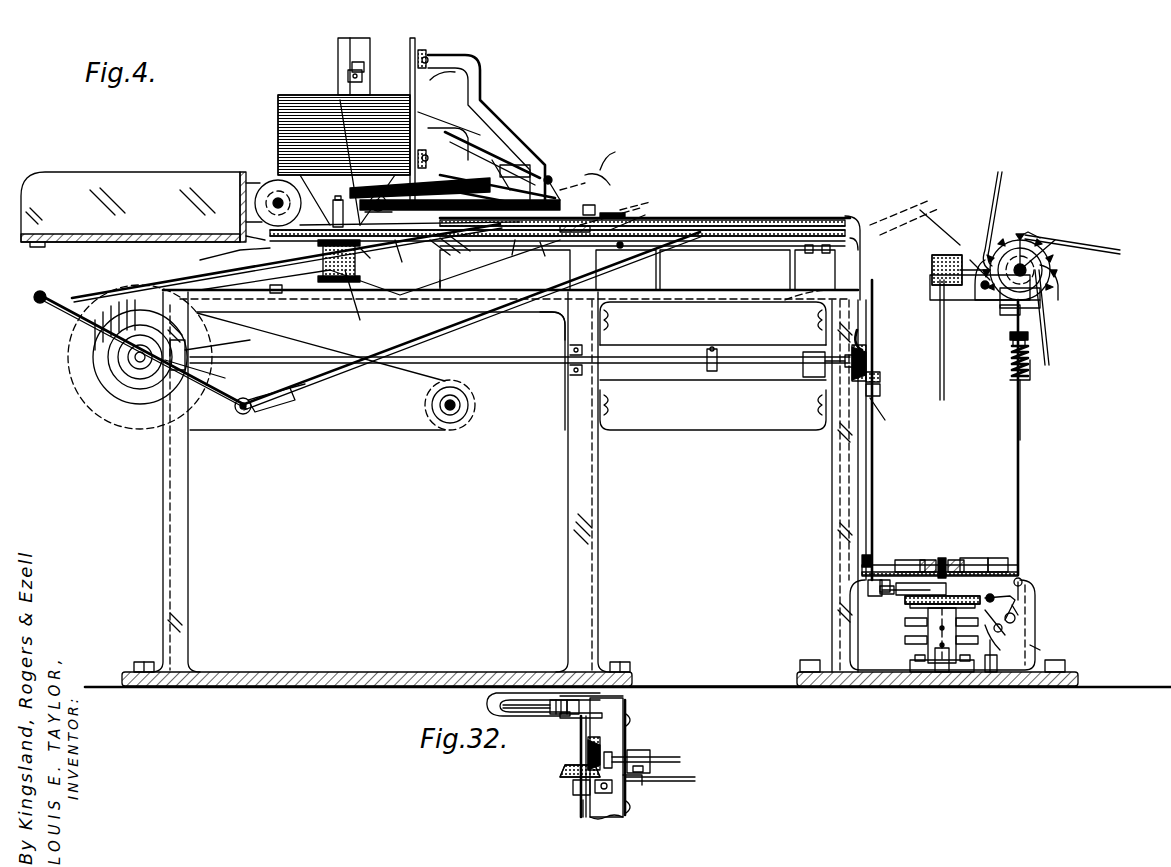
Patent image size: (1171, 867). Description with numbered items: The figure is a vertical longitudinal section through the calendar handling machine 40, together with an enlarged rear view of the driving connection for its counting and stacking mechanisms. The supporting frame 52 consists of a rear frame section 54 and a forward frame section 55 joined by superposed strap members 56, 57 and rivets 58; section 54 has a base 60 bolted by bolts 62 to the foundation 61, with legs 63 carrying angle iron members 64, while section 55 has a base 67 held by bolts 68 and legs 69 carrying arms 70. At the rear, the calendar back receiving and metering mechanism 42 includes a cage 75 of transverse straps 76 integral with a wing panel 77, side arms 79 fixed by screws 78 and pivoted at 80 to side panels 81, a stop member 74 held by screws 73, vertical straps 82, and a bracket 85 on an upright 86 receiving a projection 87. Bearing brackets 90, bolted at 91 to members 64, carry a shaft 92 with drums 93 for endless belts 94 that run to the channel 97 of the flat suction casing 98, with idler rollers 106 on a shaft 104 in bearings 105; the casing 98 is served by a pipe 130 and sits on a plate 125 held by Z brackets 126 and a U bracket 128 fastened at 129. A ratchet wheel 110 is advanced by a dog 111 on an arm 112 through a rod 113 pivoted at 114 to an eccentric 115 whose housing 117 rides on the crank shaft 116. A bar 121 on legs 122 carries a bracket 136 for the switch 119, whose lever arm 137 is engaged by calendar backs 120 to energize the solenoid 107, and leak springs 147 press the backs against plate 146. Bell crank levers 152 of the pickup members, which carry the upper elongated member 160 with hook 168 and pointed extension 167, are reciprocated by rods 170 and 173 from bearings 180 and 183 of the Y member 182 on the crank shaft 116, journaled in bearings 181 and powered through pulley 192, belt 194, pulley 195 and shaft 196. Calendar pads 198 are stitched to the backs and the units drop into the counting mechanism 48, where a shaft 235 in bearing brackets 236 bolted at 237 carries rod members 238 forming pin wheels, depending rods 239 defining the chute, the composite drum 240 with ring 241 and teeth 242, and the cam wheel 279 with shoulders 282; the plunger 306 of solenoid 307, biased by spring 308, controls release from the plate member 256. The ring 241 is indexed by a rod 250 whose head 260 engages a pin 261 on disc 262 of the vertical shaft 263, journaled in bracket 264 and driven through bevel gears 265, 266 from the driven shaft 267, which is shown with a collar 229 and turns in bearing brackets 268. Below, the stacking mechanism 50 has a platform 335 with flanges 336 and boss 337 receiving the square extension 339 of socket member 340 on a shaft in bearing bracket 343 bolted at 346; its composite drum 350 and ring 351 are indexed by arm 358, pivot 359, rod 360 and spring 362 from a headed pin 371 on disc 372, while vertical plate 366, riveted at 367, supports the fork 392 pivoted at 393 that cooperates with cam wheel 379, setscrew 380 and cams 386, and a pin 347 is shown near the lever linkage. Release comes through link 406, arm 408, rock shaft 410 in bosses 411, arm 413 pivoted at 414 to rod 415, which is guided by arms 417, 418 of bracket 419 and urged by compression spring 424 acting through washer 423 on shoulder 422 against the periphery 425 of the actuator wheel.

In FIG. 4, the machine 40 is at (760, 128).
In FIG. 4, the calendar back receiving and metering mechanism 42 is at (260, 160).
In FIG. 4, the stitched calendar pad and back unit receiving and counting mechanism 48 is at (1048, 215).
In FIG. 4, the calendar unit stacking mechanism 50 is at (950, 555).
In FIG. 4, the supporting frame 52 is at (535, 322).
In FIG. 4, the frame section 54 is at (158, 570).
In FIG. 4, the frame section 55 is at (826, 523).
In FIG. 4, the strap member 56 is at (650, 312).
In FIG. 32, the strap member 56 is at (624, 720).
In FIG. 4, the strap member 57 is at (702, 390).
In FIG. 32, the strap member 57 is at (690, 778).
In FIG. 4, the rivets 58 is at (606, 318).
In FIG. 32, the rivets 58 is at (632, 720).
In FIG. 4, the base 60 is at (360, 688).
In FIG. 4, the foundation 61 is at (718, 683).
In FIG. 4, the bolts 62 is at (145, 662).
In FIG. 4, the legs 63 is at (178, 642).
In FIG. 4, the angle iron members 64 is at (478, 312).
In FIG. 4, the base 67 is at (1015, 688).
In FIG. 4, the bolts 68 is at (808, 668).
In FIG. 4, the legs 69 is at (840, 488).
In FIG. 32, the legs 69 is at (598, 808).
In FIG. 4, the arm 70 is at (877, 348).
In FIG. 4, the screws 73 is at (515, 165).
In FIG. 4, the stop member 74 is at (505, 165).
In FIG. 4, the calendar back receiving cage 75 is at (500, 92).
In FIG. 4, the transverse straps 76 is at (422, 50).
In FIG. 4, the side or wing panel 77 is at (388, 60).
In FIG. 4, the screws 78 is at (430, 58).
In FIG. 4, the side arms 79 is at (505, 140).
In FIG. 4, the pivot 80 is at (555, 176).
In FIG. 4, the vertical side panels 81 is at (470, 150).
In FIG. 4, the vertical straps 82 is at (433, 92).
In FIG. 4, the bracket 85 is at (348, 76).
In FIG. 4, the vertical upright 86 is at (338, 42).
In FIG. 4, the projection 87 is at (352, 65).
In FIG. 4, the bearing brackets 90 is at (246, 236).
In FIG. 4, the bolts 91 is at (263, 275).
In FIG. 4, the shaft 92 is at (273, 203).
In FIG. 4, the small drums 93 is at (268, 185).
In FIG. 4, the endless belt 94 is at (246, 183).
In FIG. 4, the transverse channel 97 is at (397, 256).
In FIG. 4, the flat suction casing 98 is at (480, 240).
In FIG. 4, the third shaft 104 is at (425, 130).
In FIG. 4, the bearings 105 is at (490, 200).
In FIG. 4, the idler roller 106 is at (340, 100).
In FIG. 4, the solenoid 107 is at (361, 303).
In FIG. 4, the ratchet wheel 110 is at (246, 220).
In FIG. 4, the wide dog 111 is at (285, 285).
In FIG. 4, the arm 112 is at (334, 212).
In FIG. 4, the rod 113 is at (235, 275).
In FIG. 4, the pivotal connection 114 is at (335, 286).
In FIG. 4, the eccentric 115 is at (212, 344).
In FIG. 4, the crank shaft 116 is at (135, 370).
In FIG. 4, the housing 117 is at (118, 360).
In FIG. 4, the switch 119 is at (511, 255).
In FIG. 4, the calendar backs 120 is at (305, 115).
In FIG. 4, the transversely disposed bar 121 is at (605, 183).
In FIG. 4, the vertical legs 122 is at (596, 275).
In FIG. 4, the plate 125 is at (549, 256).
In FIG. 4, the Z brackets 126 is at (495, 278).
In FIG. 4, the U bracket 128 is at (795, 270).
In FIG. 4, the rivets or bolts 129 is at (805, 249).
In FIG. 4, the pipe 130 is at (372, 208).
In FIG. 4, the bracket 136 is at (615, 151).
In FIG. 4, the lever arm 137 is at (575, 246).
In FIG. 4, the plate 146 is at (722, 238).
In FIG. 4, the leak springs 147 is at (655, 214).
In FIG. 4, the bell crank lever 152 is at (630, 235).
In FIG. 4, the upper elongated member 160 is at (752, 217).
In FIG. 4, the pointed extension 167 is at (822, 217).
In FIG. 4, the calendar back pickup hook member 168 is at (618, 212).
In FIG. 4, the rod 170 is at (80, 296).
In FIG. 4, the rod 173 is at (315, 380).
In FIG. 4, the bearing 180 is at (55, 296).
In FIG. 4, the bearings 181 is at (207, 373).
In FIG. 4, the Y-shaped member 182 is at (275, 405).
In FIG. 4, the bearing 183 is at (240, 414).
In FIG. 4, the pulley 192 is at (112, 415).
In FIG. 4, the belt 194 is at (405, 432).
In FIG. 4, the pulley 195 is at (465, 420).
In FIG. 4, the shaft 196 is at (450, 415).
In FIG. 4, the calendar pads 198 is at (945, 240).
In FIG. 4, the collar 229 is at (712, 349).
In FIG. 4, the shaft 235 is at (1045, 265).
In FIG. 4, the bearing brackets 236 is at (1040, 295).
In FIG. 4, the bolts 237 is at (1058, 283).
In FIG. 4, the wire or rod members 238 is at (1003, 180).
In FIG. 4, the depending rod 239 is at (885, 400).
In FIG. 4, the composite drum 240 is at (1045, 268).
In FIG. 4, the ring 241 is at (1030, 235).
In FIG. 4, the teeth 242 is at (1038, 248).
In FIG. 32, the rod 250 is at (488, 702).
In FIG. 4, the plate member 256 is at (1010, 320).
In FIG. 32, the head 260 is at (555, 715).
In FIG. 32, the pin 261 is at (624, 698).
In FIG. 32, the disc 262 is at (602, 714).
In FIG. 4, the vertical shaft 263 is at (885, 335).
In FIG. 32, the vertical shaft 263 is at (580, 746).
In FIG. 4, the bearing bracket 264 is at (880, 392).
In FIG. 32, the bearing bracket 264 is at (573, 786).
In FIG. 4, the beveled gear 265 is at (880, 378).
In FIG. 32, the beveled gear 265 is at (568, 768).
In FIG. 4, the beveled gear 266 is at (868, 366).
In FIG. 32, the beveled gear 266 is at (602, 745).
In FIG. 4, the driven shaft 267 is at (295, 362).
In FIG. 32, the driven shaft 267 is at (675, 760).
In FIG. 4, the bearing bracket 268 is at (810, 352).
In FIG. 4, the cam wheel 279 is at (1050, 258).
In FIG. 4, the radial shoulders 282 is at (1030, 240).
In FIG. 4, the plunger 306 is at (975, 268).
In FIG. 4, the solenoid 307 is at (928, 248).
In FIG. 4, the spring 308 is at (1000, 316).
In FIG. 4, the platform 335 is at (926, 558).
In FIG. 4, the side flanges 336 is at (860, 563).
In FIG. 4, the central boss 337 is at (960, 558).
In FIG. 4, the square reduced extension 339 is at (942, 555).
In FIG. 4, the socket member 340 is at (912, 560).
In FIG. 4, the bearing bracket 343 is at (940, 672).
In FIG. 4, the bolts 346 is at (912, 665).
In FIG. 4, the pin 347 is at (990, 591).
In FIG. 4, the composite drum 350 is at (908, 608).
In FIG. 4, the outer ring 351 is at (1003, 565).
In FIG. 4, the arm 358 is at (965, 585).
In FIG. 4, the pivot 359 is at (888, 600).
In FIG. 4, the rod 360 is at (882, 595).
In FIG. 4, the spring 362 is at (905, 598).
In FIG. 4, the vertical plate 366 is at (998, 660).
In FIG. 4, the rivets 367 is at (995, 680).
In FIG. 4, the headed pin 371 is at (866, 588).
In FIG. 4, the disc 372 is at (888, 580).
In FIG. 4, the cam wheel 379 is at (955, 648).
In FIG. 4, the setscrew 380 is at (930, 630).
In FIG. 4, the peripheral cams 386 is at (920, 645).
In FIG. 4, the fork 392 is at (1000, 648).
In FIG. 4, the pivot 393 is at (1040, 650).
In FIG. 4, the link 406 is at (1015, 590).
In FIG. 4, the arm 408 is at (1022, 585).
In FIG. 4, the rock shaft 410 is at (1016, 618).
In FIG. 4, the bearing bosses 411 is at (1008, 632).
In FIG. 4, the arm 413 is at (1020, 608).
In FIG. 4, the pivot 414 is at (1020, 592).
In FIG. 4, the vertical rod 415 is at (1022, 500).
In FIG. 4, the arm 417 is at (1022, 395).
In FIG. 4, the arm 418 is at (1042, 300).
In FIG. 4, the bracket 419 is at (1032, 372).
In FIG. 4, the shoulder 422 is at (1030, 336).
In FIG. 4, the washer 423 is at (1028, 342).
In FIG. 4, the compression spring 424 is at (1012, 366).
In FIG. 4, the periphery 425 is at (968, 255).